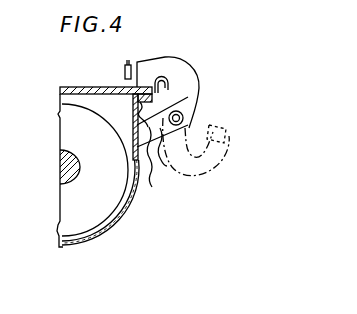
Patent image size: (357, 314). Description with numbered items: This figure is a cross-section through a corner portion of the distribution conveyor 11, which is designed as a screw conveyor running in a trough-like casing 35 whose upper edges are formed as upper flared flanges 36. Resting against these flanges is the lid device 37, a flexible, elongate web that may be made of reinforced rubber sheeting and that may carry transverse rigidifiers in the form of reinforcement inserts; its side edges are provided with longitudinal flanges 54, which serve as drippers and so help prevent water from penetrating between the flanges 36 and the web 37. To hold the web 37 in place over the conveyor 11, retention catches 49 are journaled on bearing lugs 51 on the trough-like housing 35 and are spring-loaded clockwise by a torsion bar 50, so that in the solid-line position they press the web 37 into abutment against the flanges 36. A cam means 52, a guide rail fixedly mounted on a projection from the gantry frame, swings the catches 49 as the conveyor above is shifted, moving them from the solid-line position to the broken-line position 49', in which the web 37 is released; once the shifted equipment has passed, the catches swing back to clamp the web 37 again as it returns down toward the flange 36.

The distribution conveyor 11 is at (72, 135).
The trough-like casing 35 is at (127, 212).
The upper flared flanges 36 is at (134, 111).
The lid device 37 is at (80, 87).
The retention catches 49 is at (186, 102).
The swung position of retention catch 49' is at (218, 147).
The torsion bar 50 is at (186, 92).
The bearing lugs 51 is at (138, 198).
The cam means 52 is at (124, 72).
The longitudinal flanges 54 is at (183, 78).